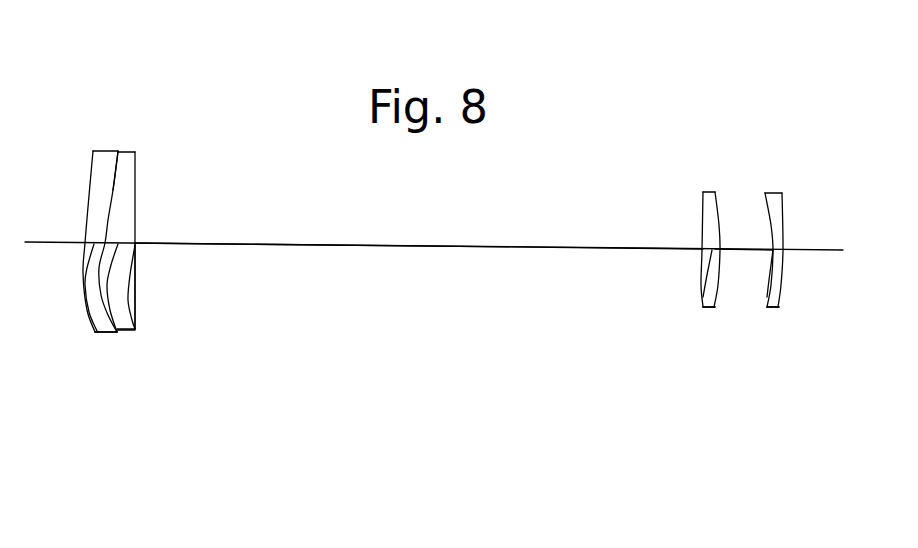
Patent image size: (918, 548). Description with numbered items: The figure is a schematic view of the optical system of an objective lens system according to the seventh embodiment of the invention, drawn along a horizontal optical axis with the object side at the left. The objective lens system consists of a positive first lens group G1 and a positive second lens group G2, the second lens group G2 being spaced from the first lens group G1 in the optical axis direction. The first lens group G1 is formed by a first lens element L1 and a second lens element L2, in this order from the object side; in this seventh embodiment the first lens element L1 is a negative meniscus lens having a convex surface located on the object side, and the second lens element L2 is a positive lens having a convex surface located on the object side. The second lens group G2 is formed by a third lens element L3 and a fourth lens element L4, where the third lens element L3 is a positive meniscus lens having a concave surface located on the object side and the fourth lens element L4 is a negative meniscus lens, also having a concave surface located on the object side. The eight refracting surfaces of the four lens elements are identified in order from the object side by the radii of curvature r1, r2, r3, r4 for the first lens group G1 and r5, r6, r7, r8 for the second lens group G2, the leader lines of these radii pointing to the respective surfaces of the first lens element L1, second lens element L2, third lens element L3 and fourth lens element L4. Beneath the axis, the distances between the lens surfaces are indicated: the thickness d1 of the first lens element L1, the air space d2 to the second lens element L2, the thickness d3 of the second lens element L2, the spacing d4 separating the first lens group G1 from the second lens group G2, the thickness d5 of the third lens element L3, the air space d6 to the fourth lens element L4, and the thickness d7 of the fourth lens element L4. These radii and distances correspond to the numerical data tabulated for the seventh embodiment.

The first lens group G1 is at (222, 58).
The second lens group G2 is at (833, 70).
The first lens element L1 is at (97, 172).
The second lens element L2 is at (123, 177).
The third lens element L3 is at (708, 215).
The fourth lens element L4 is at (775, 215).
The radius of curvature of first lens surface r1 is at (93, 151).
The radius of curvature of second lens surface r2 is at (113, 150).
The radius of curvature of third lens surface r3 is at (118, 150).
The radius of curvature of fourth lens surface r4 is at (135, 151).
The radius of curvature of fifth lens surface r5 is at (703, 192).
The radius of curvature of sixth lens surface r6 is at (714, 192).
The radius of curvature of seventh lens surface r7 is at (766, 193).
The radius of curvature of eighth lens surface r8 is at (780, 193).
The distance between lens surfaces (first lens element thickness) d1 is at (95, 332).
The distance between lens surfaces (first to second lens element) d2 is at (117, 332).
The distance between lens surfaces (second lens element thickness) d3 is at (135, 329).
The distance between lens surfaces (first to second lens group) d4 is at (425, 245).
The distance between lens surfaces (third lens element thickness) d5 is at (703, 308).
The distance between lens surfaces (third to fourth lens element) d6 is at (745, 250).
The distance between lens surfaces (fourth lens element thickness) d7 is at (767, 308).